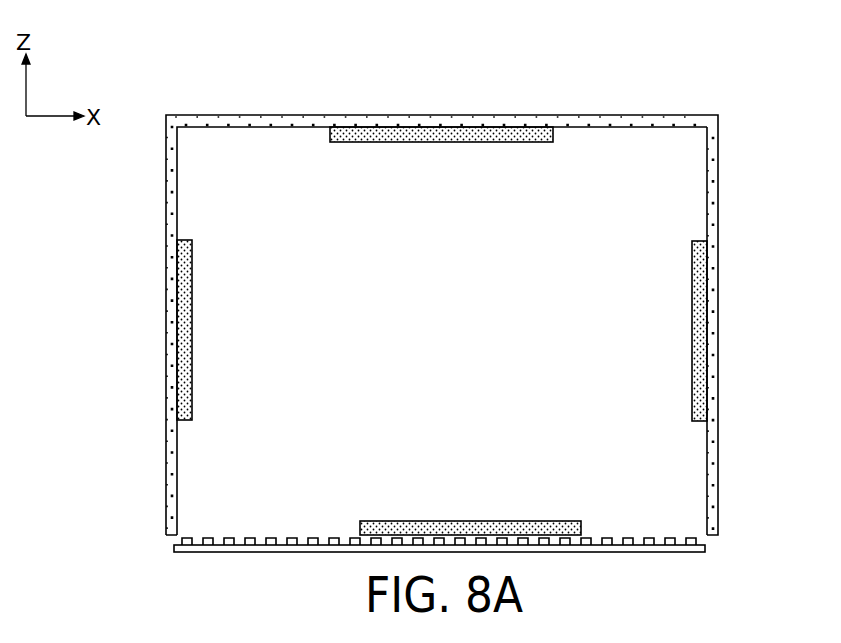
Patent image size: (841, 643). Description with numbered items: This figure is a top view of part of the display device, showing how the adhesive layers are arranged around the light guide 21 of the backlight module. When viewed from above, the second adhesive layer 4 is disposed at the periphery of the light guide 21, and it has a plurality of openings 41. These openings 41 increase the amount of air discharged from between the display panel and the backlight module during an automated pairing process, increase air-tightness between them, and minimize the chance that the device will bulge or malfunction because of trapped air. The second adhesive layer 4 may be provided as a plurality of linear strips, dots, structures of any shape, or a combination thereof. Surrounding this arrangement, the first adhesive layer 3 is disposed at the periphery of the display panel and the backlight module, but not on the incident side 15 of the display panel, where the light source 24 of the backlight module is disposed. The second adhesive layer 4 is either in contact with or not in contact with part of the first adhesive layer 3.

The openings 41 is at (183, 148).
The first adhesive layer 3 is at (712, 389).
The second adhesive layer 4 is at (696, 413).
The light guide 21 is at (700, 444).
The incident side 15 is at (177, 535).
The light source 24 is at (668, 548).